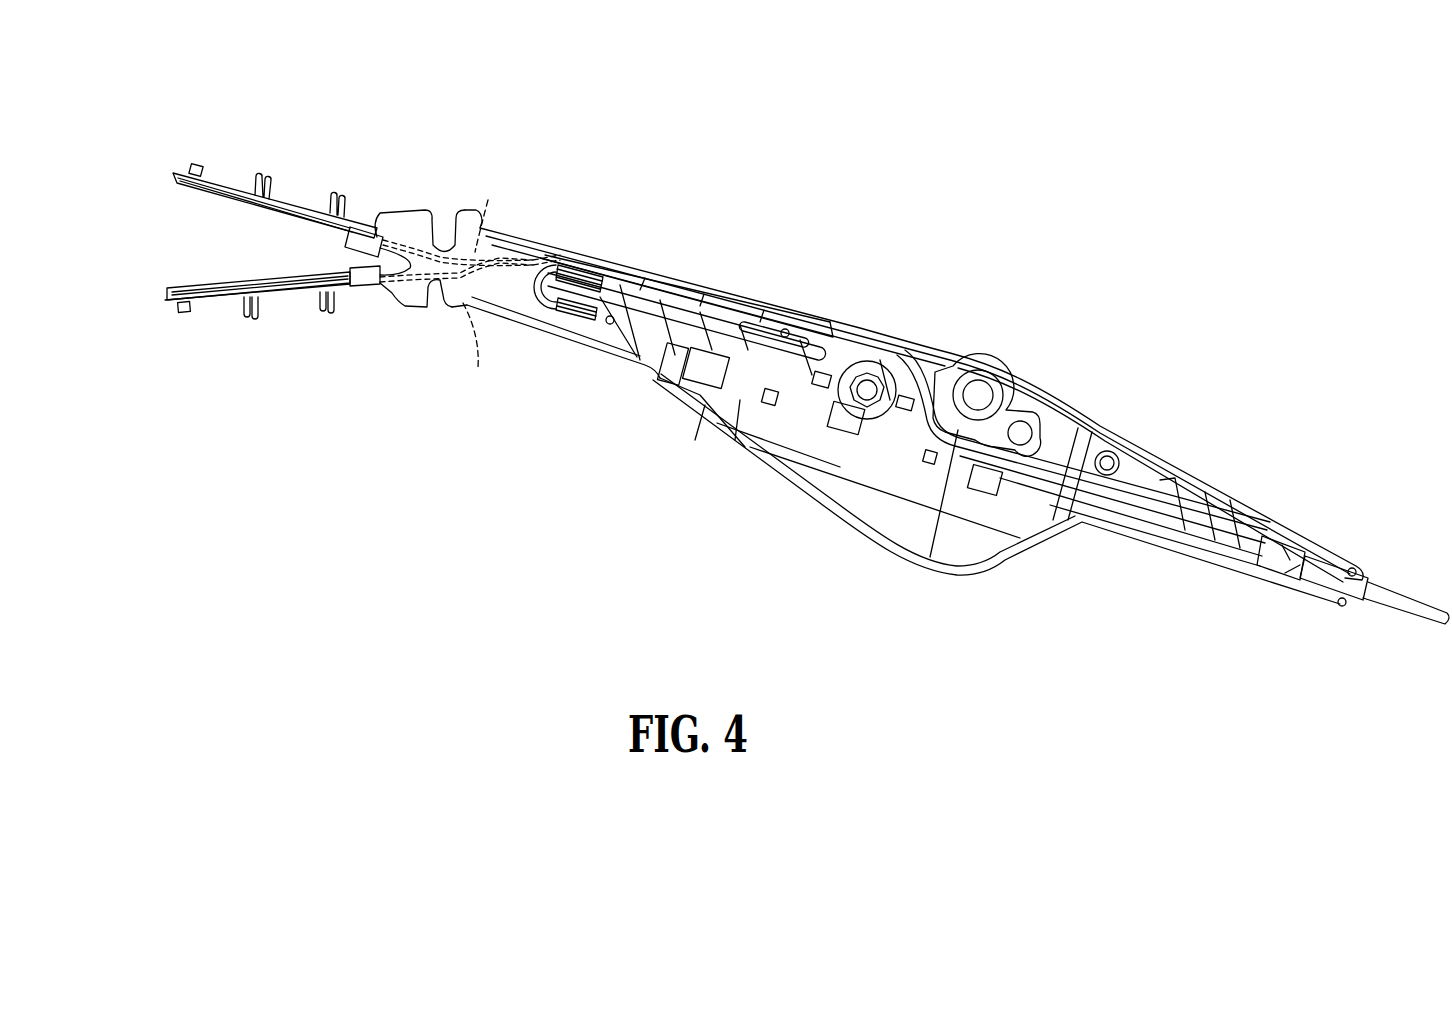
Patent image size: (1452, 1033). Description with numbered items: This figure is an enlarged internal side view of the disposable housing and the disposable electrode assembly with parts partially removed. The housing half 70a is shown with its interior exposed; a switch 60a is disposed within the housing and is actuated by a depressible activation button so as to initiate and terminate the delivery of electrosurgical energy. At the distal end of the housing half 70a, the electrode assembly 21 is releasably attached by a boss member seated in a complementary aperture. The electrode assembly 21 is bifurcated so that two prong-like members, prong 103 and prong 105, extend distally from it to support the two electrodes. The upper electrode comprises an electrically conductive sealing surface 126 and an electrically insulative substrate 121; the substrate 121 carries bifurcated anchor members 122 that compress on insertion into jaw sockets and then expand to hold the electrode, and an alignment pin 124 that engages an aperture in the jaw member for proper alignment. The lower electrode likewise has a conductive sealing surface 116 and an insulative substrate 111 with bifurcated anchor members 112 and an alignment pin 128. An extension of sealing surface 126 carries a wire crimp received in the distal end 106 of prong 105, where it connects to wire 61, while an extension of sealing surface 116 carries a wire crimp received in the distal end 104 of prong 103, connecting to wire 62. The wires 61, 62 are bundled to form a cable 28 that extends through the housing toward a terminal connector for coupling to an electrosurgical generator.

The electrode assembly 21 is at (407, 82).
The cable 28 is at (1400, 605).
The switch 60a is at (868, 388).
The housing half 70a is at (793, 310).
The wire 61 is at (489, 213).
The wire 62 is at (478, 346).
The prong 103 is at (387, 302).
The distal end of prong 104 is at (360, 298).
The prong 105 is at (412, 210).
The distal end of prong 106 is at (368, 222).
The substrate 111 is at (168, 300).
The bifurcated anchor members 112 is at (248, 318).
The sealing surface 116 is at (170, 293).
The substrate 121 is at (175, 175).
The bifurcated anchor members 122 is at (258, 173).
The alignment pin 124 is at (197, 166).
The sealing surface 126 is at (185, 187).
The alignment pin 128 is at (184, 313).